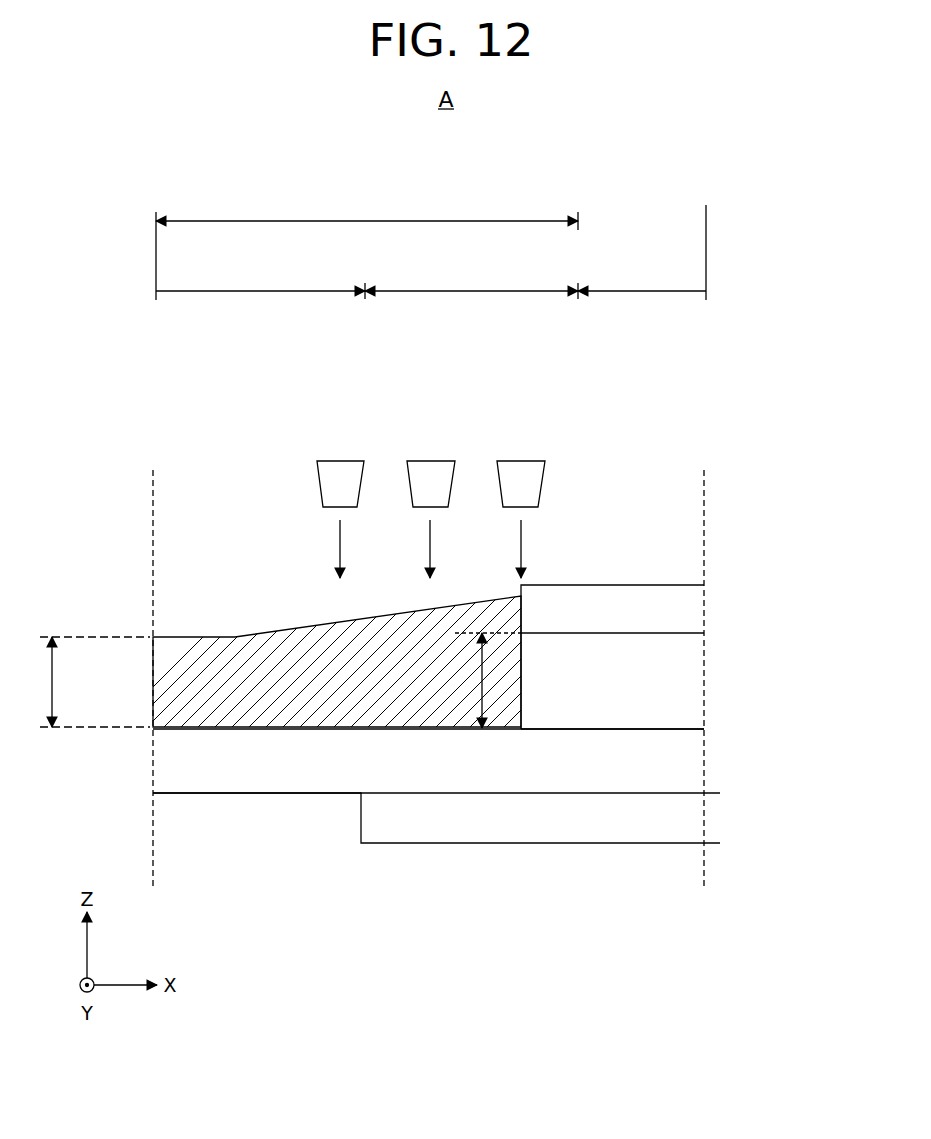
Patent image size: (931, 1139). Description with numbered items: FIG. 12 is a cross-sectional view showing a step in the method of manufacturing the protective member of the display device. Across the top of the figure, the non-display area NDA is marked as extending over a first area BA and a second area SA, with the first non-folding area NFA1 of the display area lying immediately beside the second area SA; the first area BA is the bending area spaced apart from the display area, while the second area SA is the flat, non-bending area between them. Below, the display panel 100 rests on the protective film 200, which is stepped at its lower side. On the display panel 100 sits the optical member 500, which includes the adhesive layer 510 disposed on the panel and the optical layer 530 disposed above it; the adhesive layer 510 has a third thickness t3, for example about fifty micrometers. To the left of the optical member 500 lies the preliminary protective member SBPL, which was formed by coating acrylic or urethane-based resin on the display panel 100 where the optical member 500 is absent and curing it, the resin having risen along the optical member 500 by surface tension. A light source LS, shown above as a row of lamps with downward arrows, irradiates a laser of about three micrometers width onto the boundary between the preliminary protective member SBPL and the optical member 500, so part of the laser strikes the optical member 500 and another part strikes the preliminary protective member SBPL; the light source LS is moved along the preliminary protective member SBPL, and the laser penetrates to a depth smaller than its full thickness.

The optical layer 530 is at (690, 612).
The adhesive layer 510 is at (690, 667).
The optical member 500 is at (676, 657).
The display panel 100 is at (690, 760).
The protective film 200 is at (690, 824).
The light source LS is at (530, 478).
The preliminary protective member SBPL is at (166, 685).
The third thickness t3 is at (486, 680).
The non-display area NDA is at (367, 204).
The first area BA is at (260, 276).
The second area SA is at (471, 276).
The non-folding area NFA1 is at (642, 276).